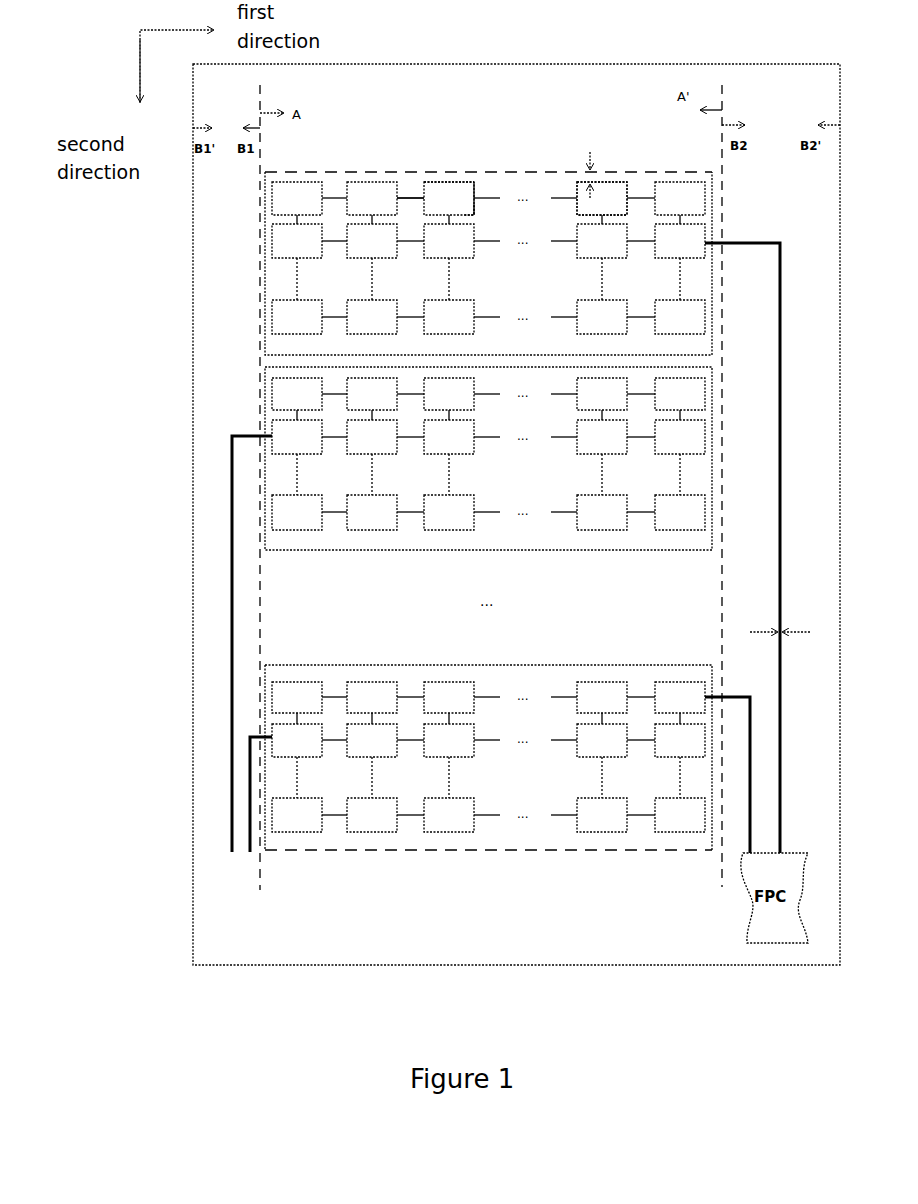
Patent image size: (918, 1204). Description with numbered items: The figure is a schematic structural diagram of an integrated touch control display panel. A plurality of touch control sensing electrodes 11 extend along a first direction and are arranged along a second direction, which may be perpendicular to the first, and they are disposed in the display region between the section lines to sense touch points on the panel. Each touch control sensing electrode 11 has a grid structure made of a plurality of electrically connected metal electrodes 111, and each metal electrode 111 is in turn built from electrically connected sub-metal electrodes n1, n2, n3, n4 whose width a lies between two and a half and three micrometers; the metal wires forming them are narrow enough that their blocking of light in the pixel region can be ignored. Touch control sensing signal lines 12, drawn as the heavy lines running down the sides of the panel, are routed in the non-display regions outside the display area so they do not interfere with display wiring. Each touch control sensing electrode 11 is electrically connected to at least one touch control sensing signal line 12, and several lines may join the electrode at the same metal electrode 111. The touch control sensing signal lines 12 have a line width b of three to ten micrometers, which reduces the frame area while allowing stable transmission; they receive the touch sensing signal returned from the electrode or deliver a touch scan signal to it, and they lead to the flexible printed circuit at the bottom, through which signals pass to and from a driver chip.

The touch control sensing electrode 11 is at (712, 217).
The touch control sensing signal line 12 is at (781, 589).
The metal electrode 111 is at (610, 190).
The sub-metal electrode n1 is at (474, 195).
The sub-metal electrode n2 is at (447, 182).
The sub-metal electrode n3 is at (422, 184).
The sub-metal electrode n4 is at (470, 216).
The width of the sub-metal electrodes a is at (583, 175).
The line width of the touch control sensing signal lines b is at (780, 643).